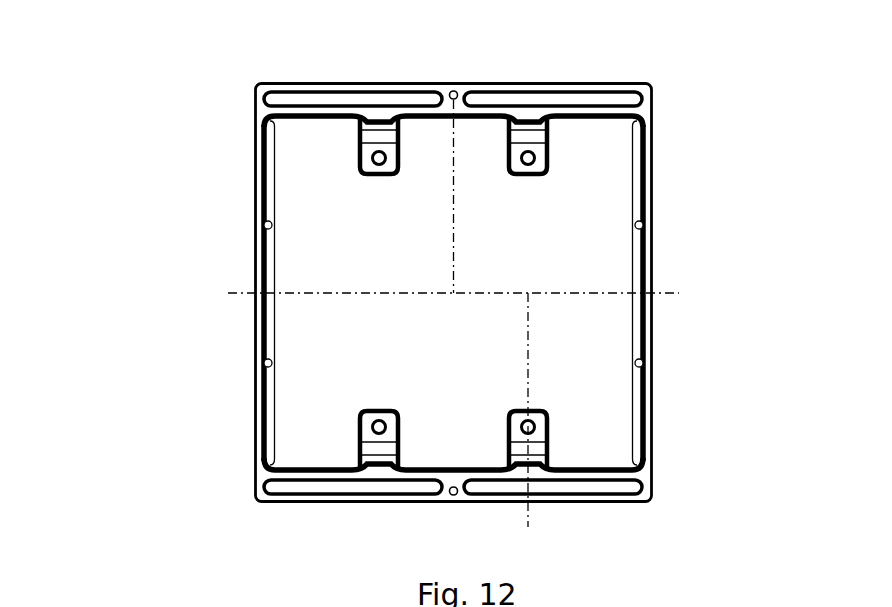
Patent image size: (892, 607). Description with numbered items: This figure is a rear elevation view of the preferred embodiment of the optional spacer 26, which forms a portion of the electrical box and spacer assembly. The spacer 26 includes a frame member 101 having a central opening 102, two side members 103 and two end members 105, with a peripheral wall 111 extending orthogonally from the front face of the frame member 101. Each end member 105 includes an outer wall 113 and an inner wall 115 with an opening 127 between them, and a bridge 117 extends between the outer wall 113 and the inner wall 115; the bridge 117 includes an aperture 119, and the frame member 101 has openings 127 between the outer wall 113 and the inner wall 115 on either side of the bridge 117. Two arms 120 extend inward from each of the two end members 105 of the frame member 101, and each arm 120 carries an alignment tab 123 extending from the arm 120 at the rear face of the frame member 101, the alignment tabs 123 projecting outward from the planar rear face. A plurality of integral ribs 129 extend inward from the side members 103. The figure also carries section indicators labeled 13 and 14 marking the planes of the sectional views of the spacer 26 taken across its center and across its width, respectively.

The spacer 26 is at (160, 145).
The frame member 101 is at (643, 505).
The central opening 102 is at (472, 341).
The side member 103 is at (651, 192).
The end member 105 is at (547, 505).
The peripheral wall 111 is at (639, 375).
The outer wall 113 is at (548, 90).
The inner wall 115 is at (600, 108).
The bridge 117 is at (462, 107).
The aperture 119 is at (458, 91).
The arm 120 is at (379, 171).
The alignment tab 123 is at (529, 137).
The opening 127 is at (333, 99).
The integral rib 129 is at (273, 363).
The section line 13- 13 is at (454, 72).
The section line 14- 14 is at (240, 293).